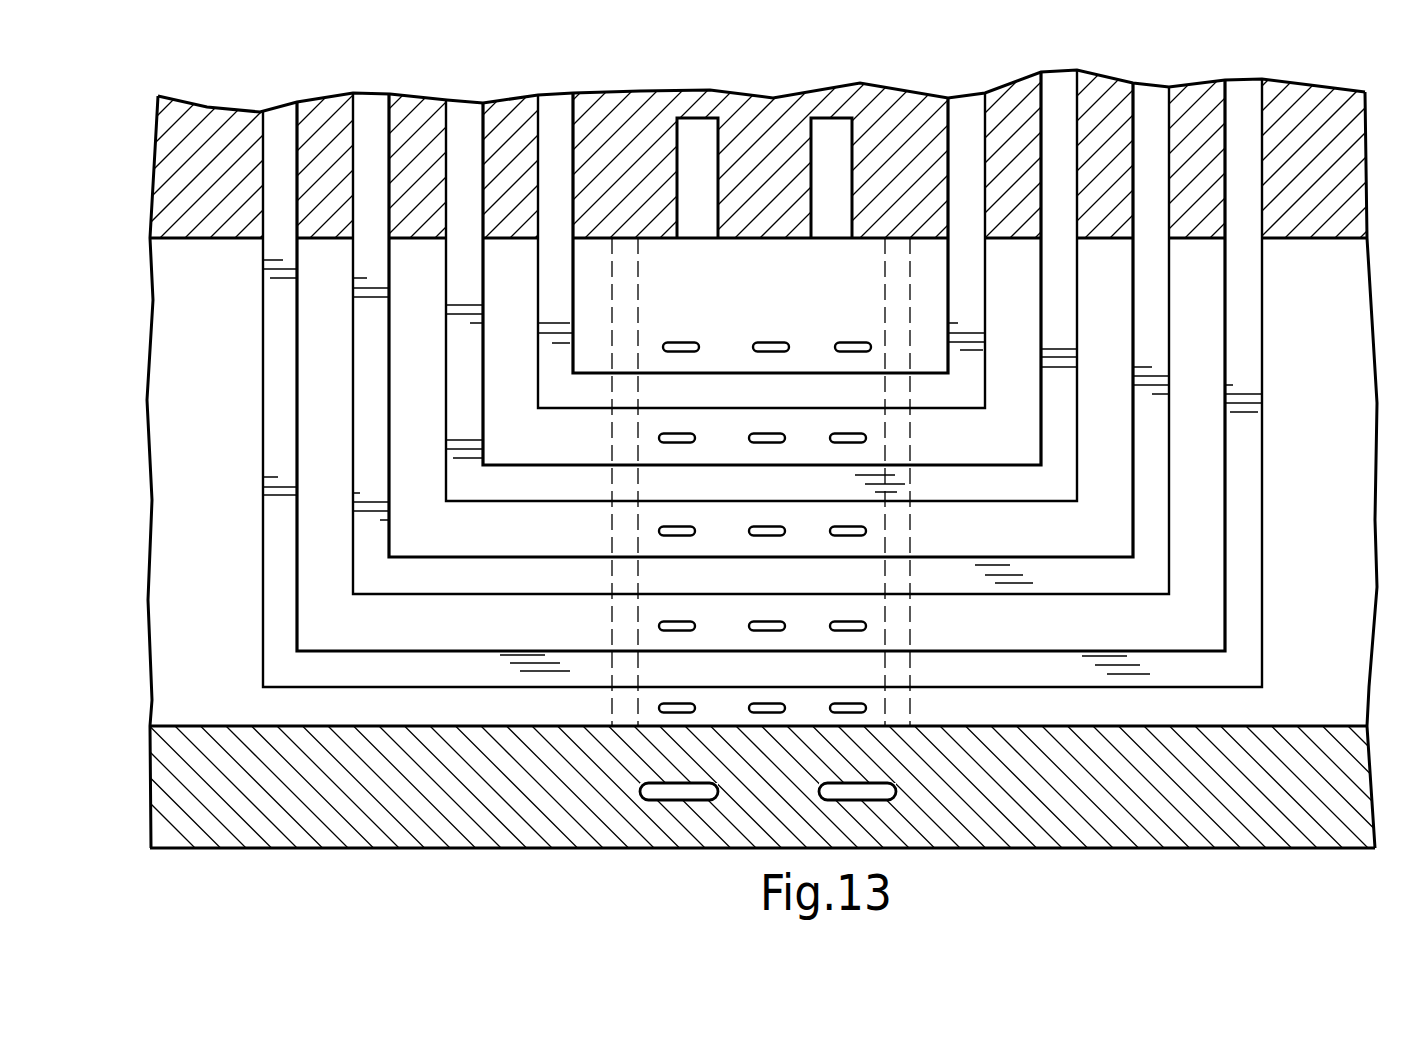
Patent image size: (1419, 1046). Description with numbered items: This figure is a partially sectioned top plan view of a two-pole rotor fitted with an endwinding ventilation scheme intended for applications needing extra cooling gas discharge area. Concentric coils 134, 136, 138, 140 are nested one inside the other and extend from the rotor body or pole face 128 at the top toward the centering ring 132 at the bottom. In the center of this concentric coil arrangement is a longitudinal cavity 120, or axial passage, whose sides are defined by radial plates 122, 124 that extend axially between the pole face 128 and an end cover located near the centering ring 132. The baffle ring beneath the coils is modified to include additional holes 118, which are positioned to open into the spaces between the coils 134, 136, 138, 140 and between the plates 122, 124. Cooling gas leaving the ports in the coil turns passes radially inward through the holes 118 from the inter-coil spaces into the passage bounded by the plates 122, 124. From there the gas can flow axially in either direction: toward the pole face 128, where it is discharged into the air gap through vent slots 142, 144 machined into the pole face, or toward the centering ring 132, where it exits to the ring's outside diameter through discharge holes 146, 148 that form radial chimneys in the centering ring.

The holes 118 is at (677, 347).
The longitudinal cavity 120 is at (817, 452).
The radial plate 122 is at (627, 265).
The radial plate 124 is at (900, 314).
The pole face 128 is at (773, 238).
The centering ring 132 is at (1095, 818).
The coil 134 is at (273, 548).
The coil 136 is at (362, 455).
The coil 138 is at (455, 405).
The coil 140 is at (548, 378).
The vent slot 142 is at (693, 130).
The vent slot 144 is at (835, 128).
The discharge hole 146 is at (668, 788).
The discharge hole 148 is at (873, 790).